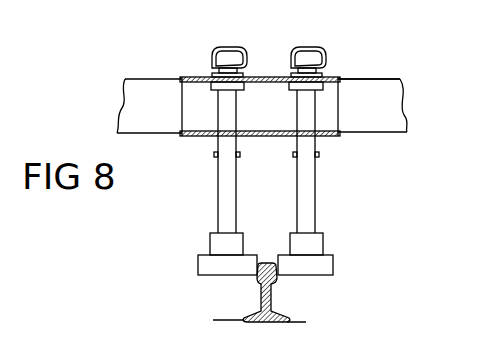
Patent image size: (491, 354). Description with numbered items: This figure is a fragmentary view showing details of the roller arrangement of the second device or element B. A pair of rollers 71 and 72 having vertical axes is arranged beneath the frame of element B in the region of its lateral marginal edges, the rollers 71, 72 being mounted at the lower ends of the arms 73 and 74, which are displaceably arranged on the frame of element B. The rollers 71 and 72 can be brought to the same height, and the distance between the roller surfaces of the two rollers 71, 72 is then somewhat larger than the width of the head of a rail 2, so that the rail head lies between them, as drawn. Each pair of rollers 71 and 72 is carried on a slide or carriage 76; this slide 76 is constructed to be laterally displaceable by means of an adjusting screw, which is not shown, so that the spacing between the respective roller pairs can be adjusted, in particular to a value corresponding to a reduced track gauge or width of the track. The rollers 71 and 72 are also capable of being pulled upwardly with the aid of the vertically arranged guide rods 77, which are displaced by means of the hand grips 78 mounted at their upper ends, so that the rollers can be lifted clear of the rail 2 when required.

The rail 2 is at (270, 302).
The roller 71 is at (203, 263).
The roller 72 is at (325, 263).
The arm 73 is at (217, 181).
The arm 74 is at (313, 202).
The slide 76 is at (193, 137).
The guide rod 77 is at (225, 107).
The hand grip 78 is at (228, 47).
The second device or element B is at (384, 72).